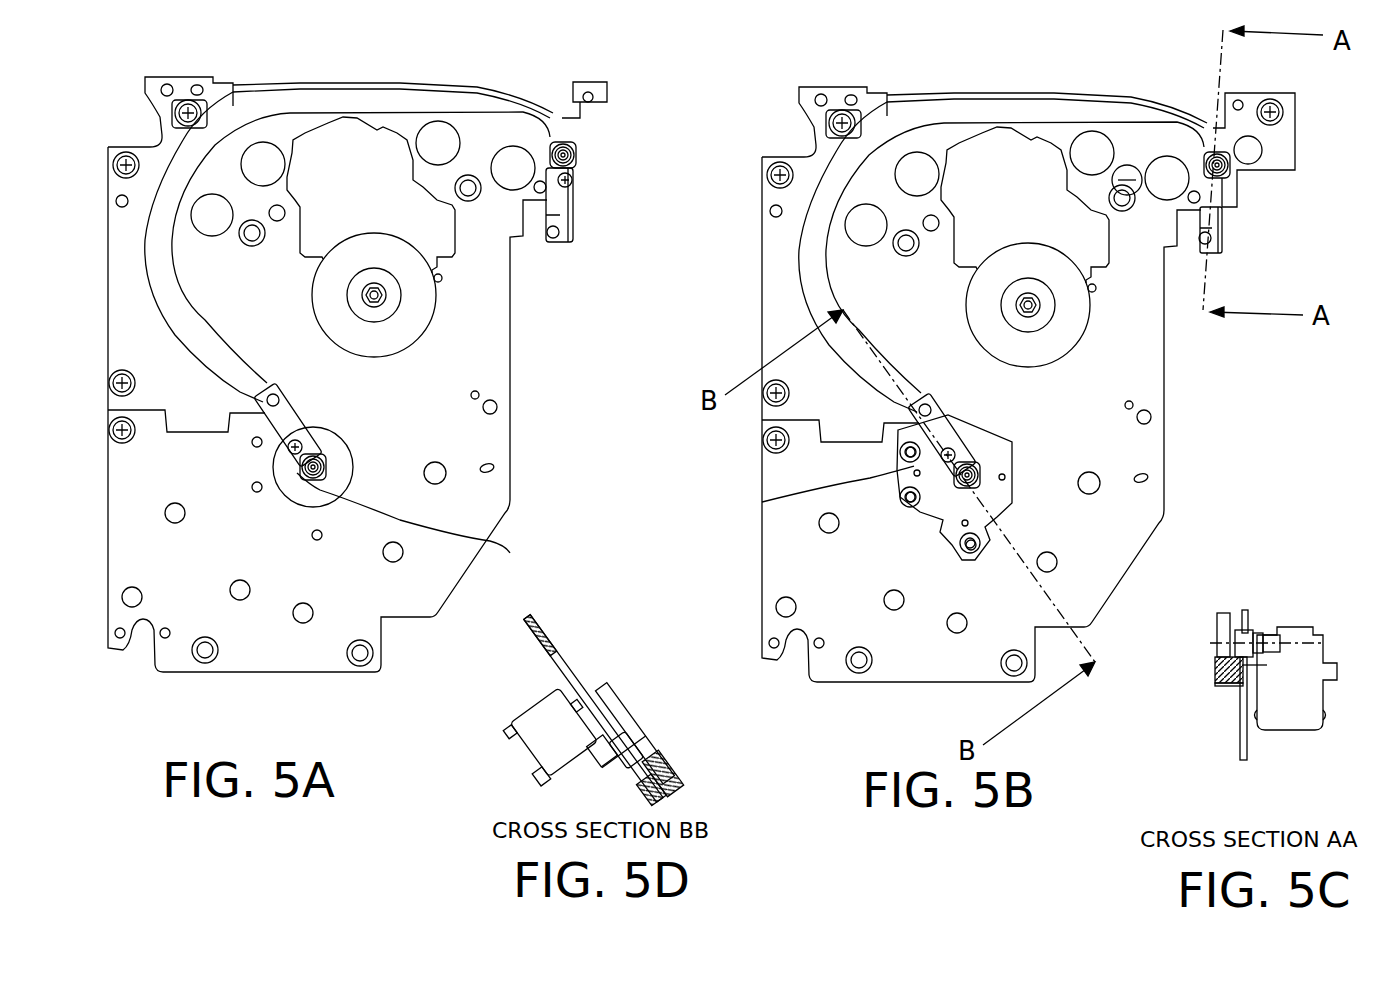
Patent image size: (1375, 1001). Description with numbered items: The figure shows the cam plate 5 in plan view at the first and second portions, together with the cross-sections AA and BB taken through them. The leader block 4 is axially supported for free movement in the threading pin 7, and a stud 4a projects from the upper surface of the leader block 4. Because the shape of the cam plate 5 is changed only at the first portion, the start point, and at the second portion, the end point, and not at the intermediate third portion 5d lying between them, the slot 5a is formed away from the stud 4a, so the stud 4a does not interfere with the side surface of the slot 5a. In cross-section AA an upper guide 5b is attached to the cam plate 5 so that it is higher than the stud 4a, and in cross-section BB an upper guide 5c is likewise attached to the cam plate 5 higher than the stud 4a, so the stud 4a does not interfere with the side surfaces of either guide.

In FIG. 5A, the leader block 4 is at (577, 155).
In FIG. 5C, the leader block 4 is at (1300, 732).
In FIG. 5D, the leader block 4 is at (537, 700).
In FIG. 5A, the stud 4a is at (573, 182).
In FIG. 5C, the stud 4a is at (1215, 658).
In FIG. 5D, the stud 4a is at (627, 708).
In FIG. 5A, the cam plate 5 is at (490, 317).
In FIG. 5C, the cam plate 5 is at (1240, 747).
In FIG. 5D, the cam plate 5 is at (567, 657).
In FIG. 5A, the slot 5a is at (570, 220).
In FIG. 5B, the upper guide 5b is at (1228, 207).
In FIG. 5C, the upper guide 5b is at (1217, 685).
In FIG. 5B, the upper guide 5c is at (896, 468).
In FIG. 5D, the upper guide 5c is at (663, 753).
In FIG. 5B, the third portion 5d is at (940, 93).
In FIG. 5A, the threading pin 7 is at (557, 137).